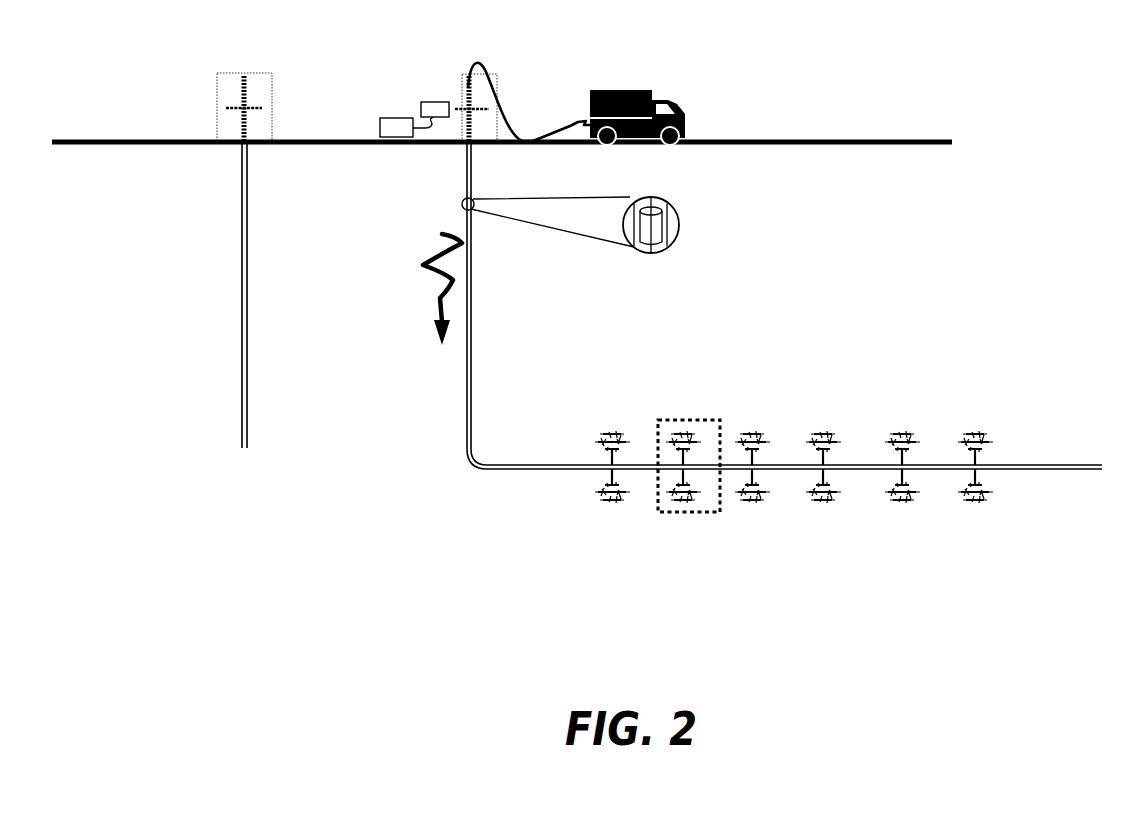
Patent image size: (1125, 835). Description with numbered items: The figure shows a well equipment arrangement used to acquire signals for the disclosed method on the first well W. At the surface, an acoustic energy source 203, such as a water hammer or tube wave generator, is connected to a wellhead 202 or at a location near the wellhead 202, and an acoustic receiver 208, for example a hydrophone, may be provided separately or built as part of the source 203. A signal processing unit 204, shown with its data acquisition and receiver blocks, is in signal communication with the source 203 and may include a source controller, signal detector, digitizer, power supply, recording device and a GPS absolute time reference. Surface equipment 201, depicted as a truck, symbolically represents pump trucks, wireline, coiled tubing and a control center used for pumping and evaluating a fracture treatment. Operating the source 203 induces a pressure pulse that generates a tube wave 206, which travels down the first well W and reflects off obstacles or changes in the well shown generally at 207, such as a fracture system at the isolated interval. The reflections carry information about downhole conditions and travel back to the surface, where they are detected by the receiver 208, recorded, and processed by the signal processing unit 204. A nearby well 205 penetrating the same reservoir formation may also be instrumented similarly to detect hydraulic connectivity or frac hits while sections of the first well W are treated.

The surface equipment 201 is at (633, 101).
The wellhead 202 is at (518, 79).
The acoustic energy source 203 is at (455, 101).
The signal processing unit 204 is at (407, 106).
The nearby well 205 is at (244, 242).
The tube wave 206 is at (415, 289).
The obstacles or changes in the well 207 is at (688, 420).
The acoustic receiver 208 is at (591, 214).
The first well W is at (462, 167).